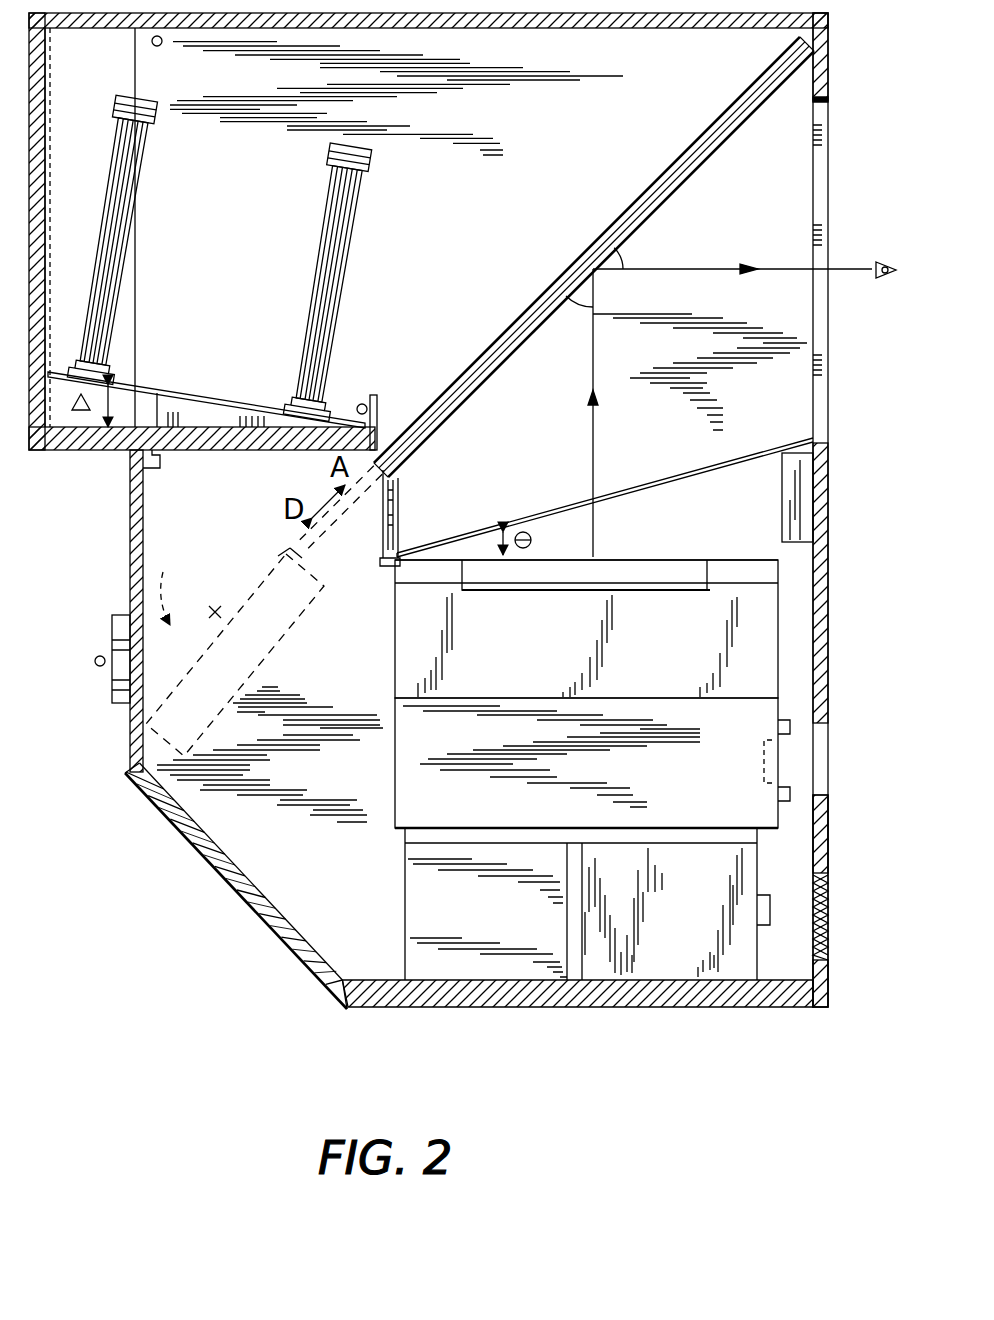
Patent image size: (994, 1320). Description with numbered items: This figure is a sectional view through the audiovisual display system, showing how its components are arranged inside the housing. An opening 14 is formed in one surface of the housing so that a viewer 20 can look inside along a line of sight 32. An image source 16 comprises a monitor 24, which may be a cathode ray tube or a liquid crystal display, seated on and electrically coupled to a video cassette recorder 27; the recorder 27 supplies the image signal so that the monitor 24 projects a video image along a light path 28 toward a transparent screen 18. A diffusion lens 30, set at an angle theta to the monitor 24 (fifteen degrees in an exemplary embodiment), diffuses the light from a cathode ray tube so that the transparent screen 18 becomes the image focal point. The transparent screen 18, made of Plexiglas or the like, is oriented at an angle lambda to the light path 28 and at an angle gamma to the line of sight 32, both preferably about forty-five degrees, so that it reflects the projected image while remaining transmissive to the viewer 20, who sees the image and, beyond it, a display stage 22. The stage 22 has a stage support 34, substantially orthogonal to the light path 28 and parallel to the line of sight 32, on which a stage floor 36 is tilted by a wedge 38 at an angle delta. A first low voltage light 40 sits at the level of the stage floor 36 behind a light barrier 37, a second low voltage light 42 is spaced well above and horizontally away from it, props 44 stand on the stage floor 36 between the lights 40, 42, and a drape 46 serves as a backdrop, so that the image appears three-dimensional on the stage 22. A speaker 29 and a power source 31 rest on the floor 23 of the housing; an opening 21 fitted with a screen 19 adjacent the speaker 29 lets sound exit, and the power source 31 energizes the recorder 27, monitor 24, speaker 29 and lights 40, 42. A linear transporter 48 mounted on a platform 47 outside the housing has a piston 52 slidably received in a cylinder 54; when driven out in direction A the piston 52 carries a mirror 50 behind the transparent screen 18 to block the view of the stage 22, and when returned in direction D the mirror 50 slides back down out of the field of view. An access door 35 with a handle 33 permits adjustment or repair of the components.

The opening 14 is at (800, 383).
The image source 16 is at (381, 770).
The transparent screen 18 is at (656, 206).
The screen 19 is at (822, 888).
The viewer 20 is at (886, 264).
The opening 21 is at (828, 960).
The display stage 22 is at (212, 212).
The floor 23 is at (356, 985).
The monitor 24 is at (572, 654).
The video cassette recorder 27 is at (695, 792).
The light path 28 is at (595, 378).
The speaker 29 is at (720, 980).
The diffusion lens 30 is at (664, 485).
The power source 31 is at (410, 878).
The line of sight 32 is at (786, 268).
The handle 33 is at (120, 620).
The stage support 34 is at (246, 452).
The access door 35 is at (145, 505).
The stage floor 36 is at (190, 392).
The light barrier 37 is at (378, 410).
The wedge 38 is at (224, 410).
The first low voltage light 40 is at (360, 403).
The second low voltage light 42 is at (159, 46).
The props 44 is at (118, 243).
The drape 46 is at (48, 90).
The platform 47 is at (283, 652).
The linear transporter 48 is at (172, 582).
The mirror 50 is at (514, 338).
The piston 52 is at (303, 555).
The cylinder 54 is at (213, 610).